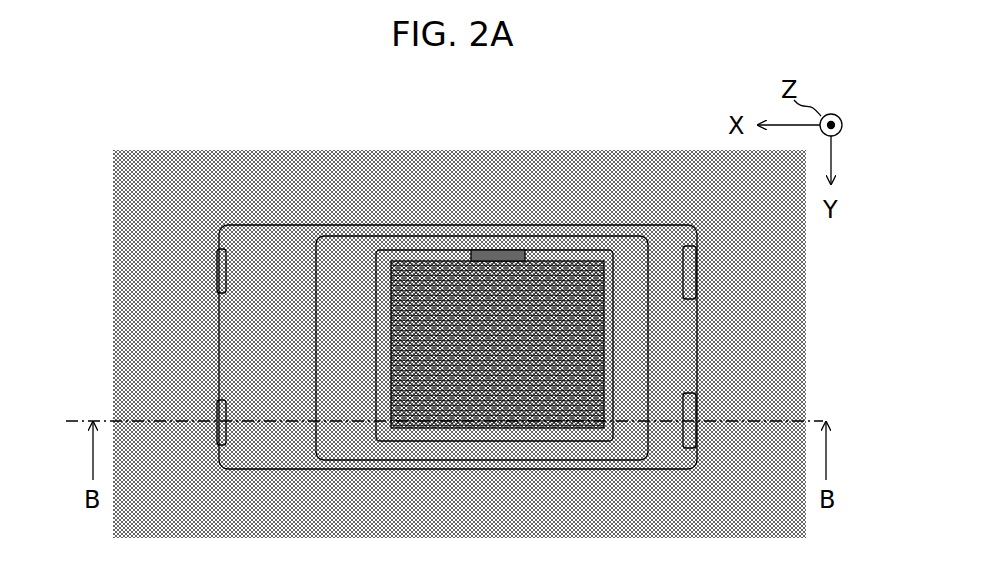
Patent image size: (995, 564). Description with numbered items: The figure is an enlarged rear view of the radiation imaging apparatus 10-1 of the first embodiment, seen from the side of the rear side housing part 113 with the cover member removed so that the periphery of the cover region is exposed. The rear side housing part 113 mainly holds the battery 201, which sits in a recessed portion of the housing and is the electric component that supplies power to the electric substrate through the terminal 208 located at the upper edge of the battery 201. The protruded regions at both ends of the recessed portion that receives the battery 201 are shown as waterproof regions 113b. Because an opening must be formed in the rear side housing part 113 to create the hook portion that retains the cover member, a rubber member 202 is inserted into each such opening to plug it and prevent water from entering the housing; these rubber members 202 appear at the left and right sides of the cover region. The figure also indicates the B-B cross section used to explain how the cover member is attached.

The radiation imaging apparatus 10-1 is at (251, 130).
The rear side housing part 113 is at (583, 177).
The waterproof regions 113b is at (608, 243).
The battery 201 is at (403, 282).
The terminal 208 is at (490, 242).
The rubber member 202 is at (213, 262).